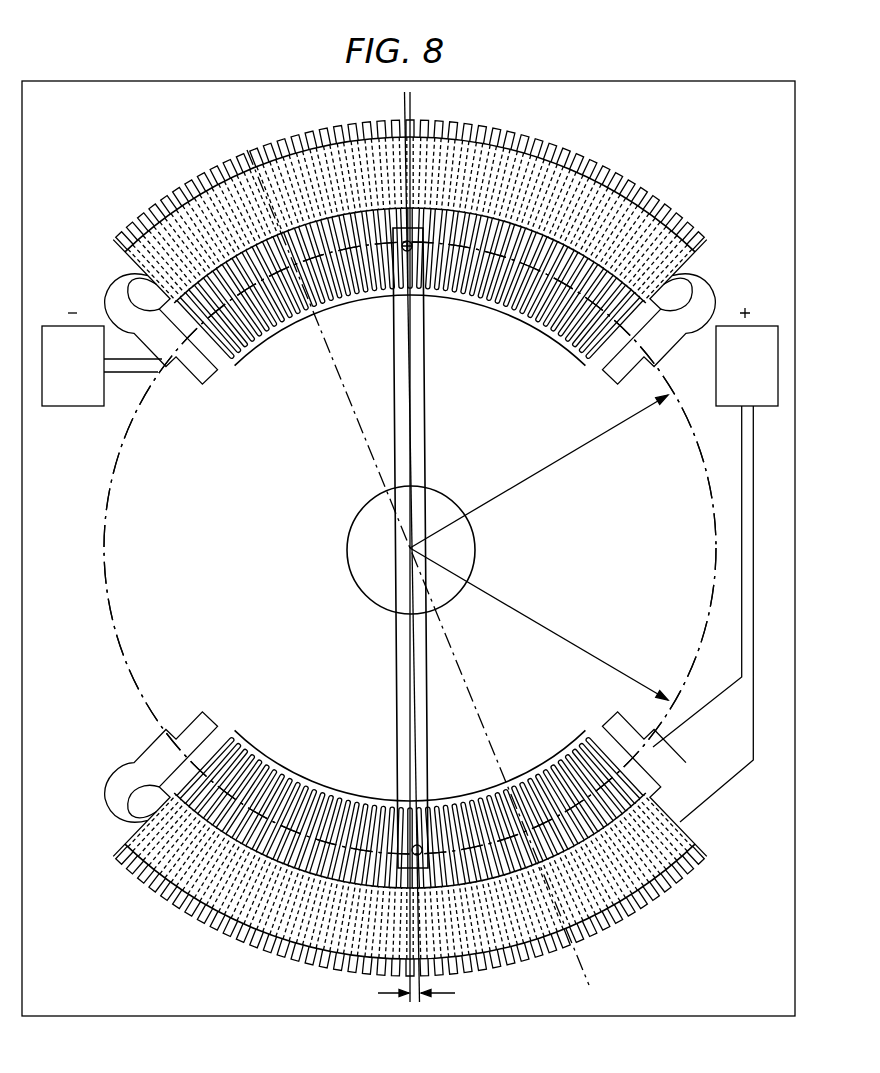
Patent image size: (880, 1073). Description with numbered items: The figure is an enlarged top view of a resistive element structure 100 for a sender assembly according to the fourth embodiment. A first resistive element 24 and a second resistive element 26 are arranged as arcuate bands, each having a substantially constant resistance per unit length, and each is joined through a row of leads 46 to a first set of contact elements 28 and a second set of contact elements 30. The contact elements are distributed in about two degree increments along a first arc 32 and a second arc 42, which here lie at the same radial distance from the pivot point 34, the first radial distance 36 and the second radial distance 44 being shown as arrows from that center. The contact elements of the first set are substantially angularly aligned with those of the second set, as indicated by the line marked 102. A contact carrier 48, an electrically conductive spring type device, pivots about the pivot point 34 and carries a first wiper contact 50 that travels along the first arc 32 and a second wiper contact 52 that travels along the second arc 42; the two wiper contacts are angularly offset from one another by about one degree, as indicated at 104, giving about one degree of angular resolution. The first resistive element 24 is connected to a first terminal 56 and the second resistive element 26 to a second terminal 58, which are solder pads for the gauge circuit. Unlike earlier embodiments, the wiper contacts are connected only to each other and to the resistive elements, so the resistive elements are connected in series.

The resistive element structure 100 is at (604, 79).
The angular alignment indication 102 is at (240, 134).
The angular offset indication 104 is at (440, 995).
The first resistive element 24 is at (700, 860).
The second resistive element 26 is at (688, 248).
The first set of contact elements 28 is at (289, 768).
The second set of contact elements 30 is at (272, 336).
The first arc 32 is at (127, 676).
The pivot point 34 is at (410, 548).
The first radial distance 36 is at (585, 652).
The second arc 42 is at (118, 436).
The second radial distance 44 is at (585, 445).
The leads 46 is at (247, 153).
The contact carrier 48 is at (425, 358).
The first wiper contact 50 is at (412, 848).
The second wiper contact 52 is at (402, 250).
The first terminal 56 is at (762, 382).
The second terminal 58 is at (88, 382).